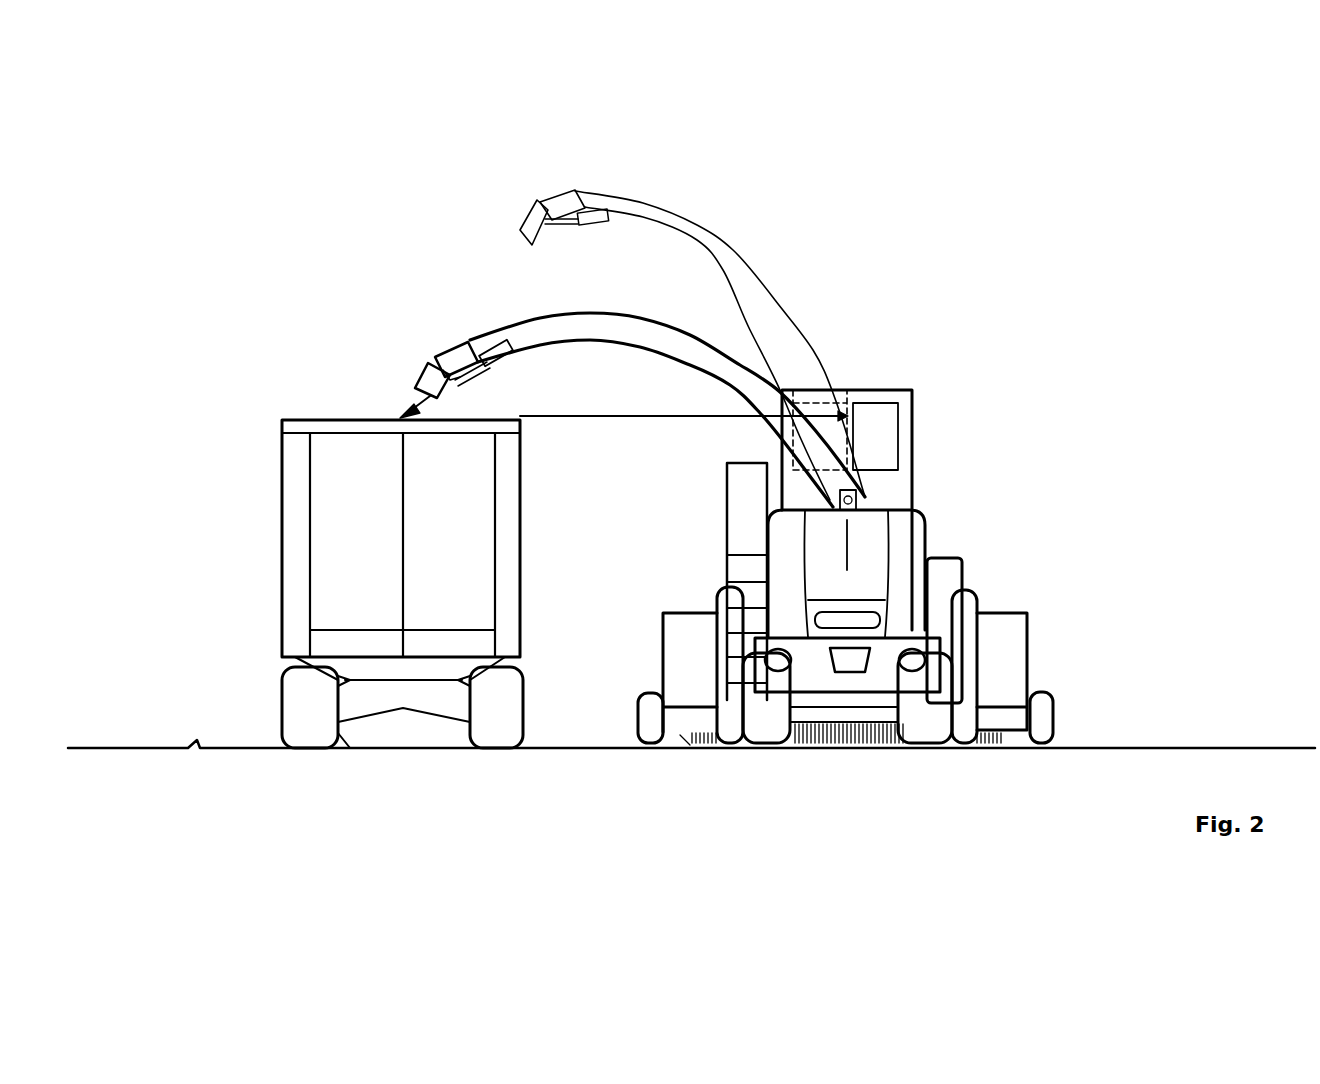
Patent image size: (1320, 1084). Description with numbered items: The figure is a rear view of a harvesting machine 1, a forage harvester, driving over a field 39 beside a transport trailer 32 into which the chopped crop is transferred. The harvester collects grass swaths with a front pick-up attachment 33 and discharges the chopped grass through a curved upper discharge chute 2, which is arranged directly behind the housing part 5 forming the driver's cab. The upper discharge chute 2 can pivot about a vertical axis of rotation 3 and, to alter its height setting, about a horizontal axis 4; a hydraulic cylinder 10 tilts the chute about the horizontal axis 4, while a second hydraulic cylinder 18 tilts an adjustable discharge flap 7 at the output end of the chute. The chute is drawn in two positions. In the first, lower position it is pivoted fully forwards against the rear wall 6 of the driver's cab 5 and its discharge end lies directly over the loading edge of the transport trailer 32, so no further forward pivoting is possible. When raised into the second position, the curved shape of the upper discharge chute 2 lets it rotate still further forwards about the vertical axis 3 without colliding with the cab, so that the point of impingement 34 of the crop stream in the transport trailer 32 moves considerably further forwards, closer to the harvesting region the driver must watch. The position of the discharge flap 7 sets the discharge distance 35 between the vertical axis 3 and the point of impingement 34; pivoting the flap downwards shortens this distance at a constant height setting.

The harvesting machine 1 is at (860, 524).
The upper discharge chute 2 is at (612, 318).
The vertical axis of rotation 3 is at (845, 390).
The horizontal axis 4 is at (860, 499).
The housing part 5 is at (868, 467).
The rear wall 6 is at (912, 432).
The discharge flap 7 is at (436, 358).
The hydraulic cylinder 10 is at (830, 505).
The hydraulic cylinder 18 is at (507, 362).
The transport trailer 32 is at (290, 537).
The front pick-up attachment 33 is at (1020, 646).
The point of impingement 34 is at (400, 416).
The discharge distance 35 is at (622, 420).
The field 39 is at (539, 764).